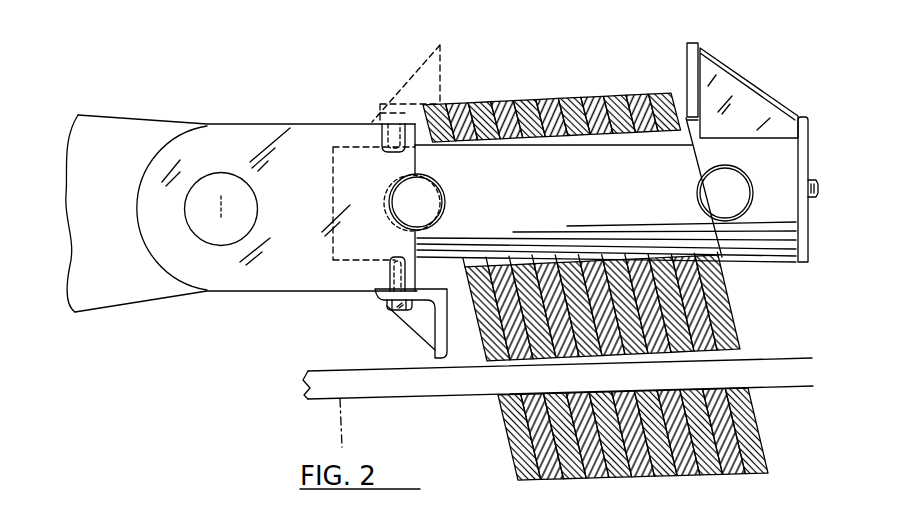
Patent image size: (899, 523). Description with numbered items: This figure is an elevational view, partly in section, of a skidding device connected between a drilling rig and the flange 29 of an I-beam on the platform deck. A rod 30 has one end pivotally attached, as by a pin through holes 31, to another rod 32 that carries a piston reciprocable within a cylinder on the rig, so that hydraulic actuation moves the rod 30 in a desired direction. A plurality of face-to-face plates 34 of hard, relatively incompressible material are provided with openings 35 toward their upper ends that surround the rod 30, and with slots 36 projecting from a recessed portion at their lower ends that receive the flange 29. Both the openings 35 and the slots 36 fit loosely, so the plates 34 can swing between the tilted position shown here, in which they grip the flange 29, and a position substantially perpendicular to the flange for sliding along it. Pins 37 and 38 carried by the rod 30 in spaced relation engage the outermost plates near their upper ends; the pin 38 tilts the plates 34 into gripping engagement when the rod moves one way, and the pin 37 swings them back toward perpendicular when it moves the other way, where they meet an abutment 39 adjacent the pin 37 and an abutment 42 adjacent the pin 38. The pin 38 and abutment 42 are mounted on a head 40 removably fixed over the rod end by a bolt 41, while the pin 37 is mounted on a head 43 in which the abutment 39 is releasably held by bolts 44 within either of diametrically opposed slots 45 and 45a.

The flange 29 is at (785, 357).
The rod 30 is at (511, 193).
The holes 31 is at (213, 183).
The rod 32 is at (143, 303).
The plates 34 is at (762, 420).
The openings 35 is at (590, 144).
The slots 36 is at (493, 366).
The pin 37 is at (398, 183).
The pin 38 is at (745, 188).
The abutment 39 is at (413, 80).
The head 40 is at (800, 118).
The bolt 41 is at (815, 200).
The abutment 42 is at (727, 66).
The head 43 is at (278, 292).
The bolts 44 is at (387, 305).
The slot 45 is at (398, 126).
The slot 45a is at (386, 273).